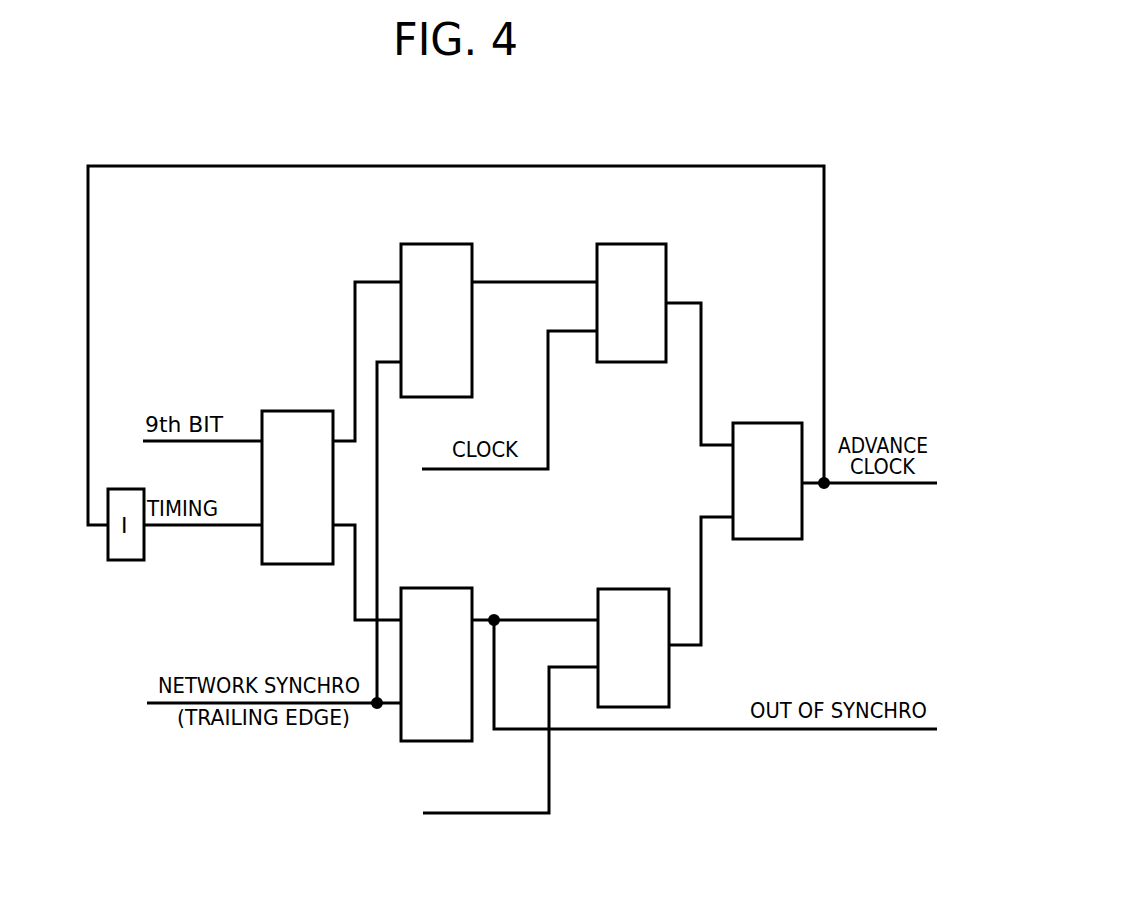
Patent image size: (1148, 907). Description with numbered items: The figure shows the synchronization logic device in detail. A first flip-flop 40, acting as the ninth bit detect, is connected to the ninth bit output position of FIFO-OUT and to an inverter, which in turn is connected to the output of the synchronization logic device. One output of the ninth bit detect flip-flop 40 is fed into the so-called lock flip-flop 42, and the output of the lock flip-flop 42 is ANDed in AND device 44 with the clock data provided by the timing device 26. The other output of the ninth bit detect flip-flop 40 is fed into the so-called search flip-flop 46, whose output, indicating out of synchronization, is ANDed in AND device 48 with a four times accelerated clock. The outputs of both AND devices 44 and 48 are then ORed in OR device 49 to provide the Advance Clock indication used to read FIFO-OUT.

The first flip-flop 40 is at (303, 564).
The lock flip-flop 42 is at (473, 363).
The AND device 44 is at (667, 268).
The search flip-flop 46 is at (473, 603).
The AND device 48 is at (640, 589).
The OR device 49 is at (802, 539).
The timing device 26 is at (489, 758).